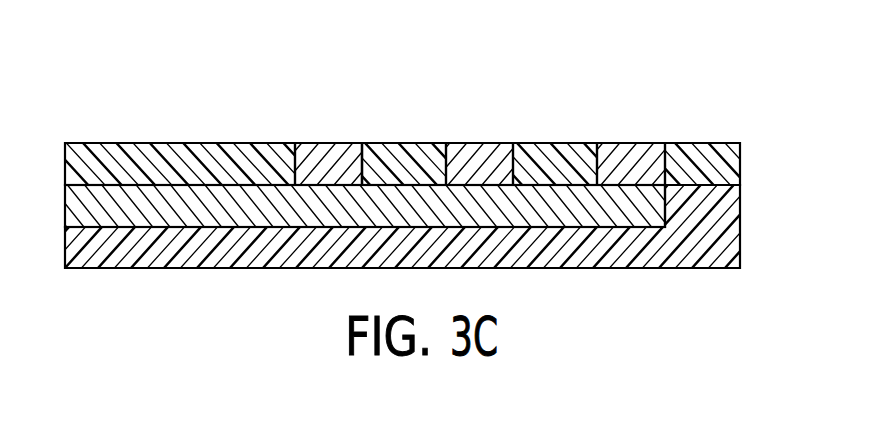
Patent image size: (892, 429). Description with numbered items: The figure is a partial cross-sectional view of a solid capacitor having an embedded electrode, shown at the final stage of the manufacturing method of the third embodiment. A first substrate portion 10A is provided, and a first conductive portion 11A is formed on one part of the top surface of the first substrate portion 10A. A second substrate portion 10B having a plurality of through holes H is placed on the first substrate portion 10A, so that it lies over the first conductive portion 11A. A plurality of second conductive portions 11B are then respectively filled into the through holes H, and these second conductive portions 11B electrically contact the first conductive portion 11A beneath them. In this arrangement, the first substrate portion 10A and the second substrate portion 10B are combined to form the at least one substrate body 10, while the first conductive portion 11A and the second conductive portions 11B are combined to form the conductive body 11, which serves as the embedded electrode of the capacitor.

The substrate body 10 is at (408, 151).
The first substrate portion 10A is at (135, 240).
The second substrate portion 10B is at (228, 158).
The conductive body 11 is at (368, 131).
The first conductive portion 11A is at (398, 217).
The second conductive portions 11B is at (480, 157).
The through holes H is at (362, 162).